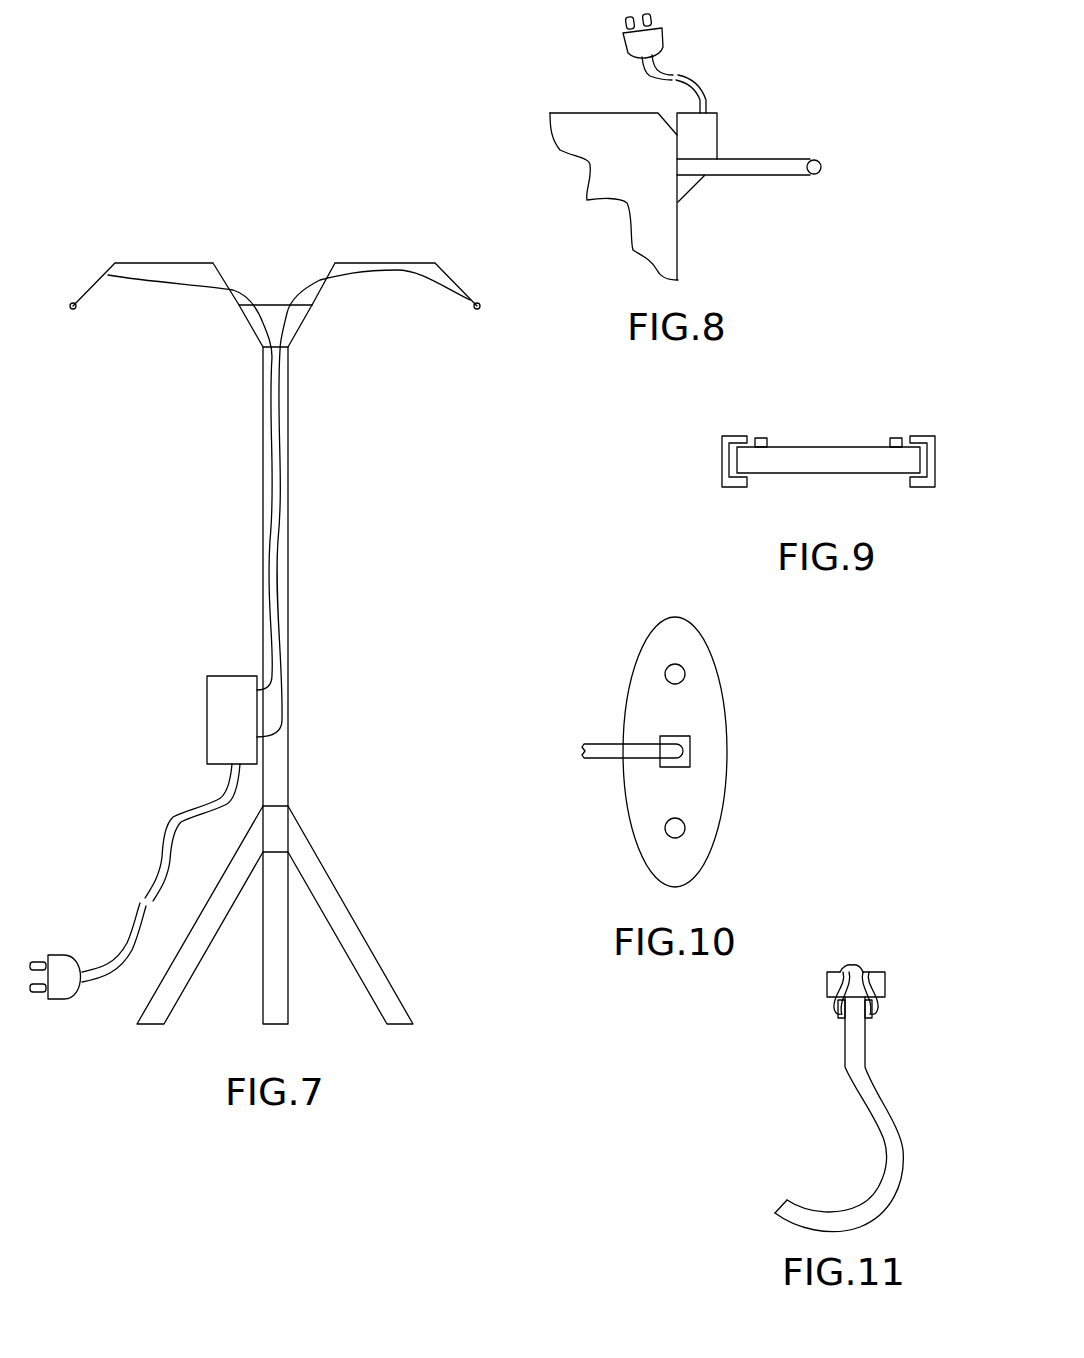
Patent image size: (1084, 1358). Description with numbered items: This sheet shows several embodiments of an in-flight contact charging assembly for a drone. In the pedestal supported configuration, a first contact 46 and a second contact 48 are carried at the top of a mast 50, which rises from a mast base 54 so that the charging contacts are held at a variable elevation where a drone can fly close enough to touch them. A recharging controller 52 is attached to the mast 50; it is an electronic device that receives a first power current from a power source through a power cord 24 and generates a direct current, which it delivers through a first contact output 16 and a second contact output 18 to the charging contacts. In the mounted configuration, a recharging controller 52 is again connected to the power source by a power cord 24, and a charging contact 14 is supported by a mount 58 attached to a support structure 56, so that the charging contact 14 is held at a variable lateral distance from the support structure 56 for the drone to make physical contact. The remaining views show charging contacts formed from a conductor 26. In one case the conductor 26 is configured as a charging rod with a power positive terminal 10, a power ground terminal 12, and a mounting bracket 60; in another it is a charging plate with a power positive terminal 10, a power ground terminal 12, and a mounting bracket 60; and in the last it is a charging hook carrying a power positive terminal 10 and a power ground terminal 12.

In FIG. 9, the power positive terminal 10 is at (762, 438).
In FIG. 10, the power positive terminal 10 is at (672, 673).
In FIG. 11, the power positive terminal 10 is at (883, 1010).
In FIG. 9, the power ground terminal 12 is at (897, 438).
In FIG. 10, the power ground terminal 12 is at (678, 830).
In FIG. 11, the power ground terminal 12 is at (838, 1007).
In FIG. 8, the charging contact 14 is at (820, 162).
In FIG. 7, the first contact output 16 is at (283, 378).
In FIG. 7, the second contact output 18 is at (260, 410).
In FIG. 7, the power cord 24 is at (167, 830).
In FIG. 9, the conductor 26 is at (828, 458).
In FIG. 10, the conductor 26 is at (718, 802).
In FIG. 11, the conductor 26 is at (868, 1097).
In FIG. 7, the first contact 46 is at (478, 304).
In FIG. 7, the second contact 48 is at (72, 303).
In FIG. 7, the mast 50 is at (282, 757).
In FIG. 7, the recharging controller 52 is at (218, 702).
In FIG. 8, the recharging controller 52 is at (653, 77).
In FIG. 7, the mast base 54 is at (325, 892).
In FIG. 8, the support structure 56 is at (578, 130).
In FIG. 8, the mount 58 is at (757, 175).
In FIG. 9, the mounting bracket 60 is at (725, 452).
In FIG. 10, the mounting bracket 60 is at (600, 747).